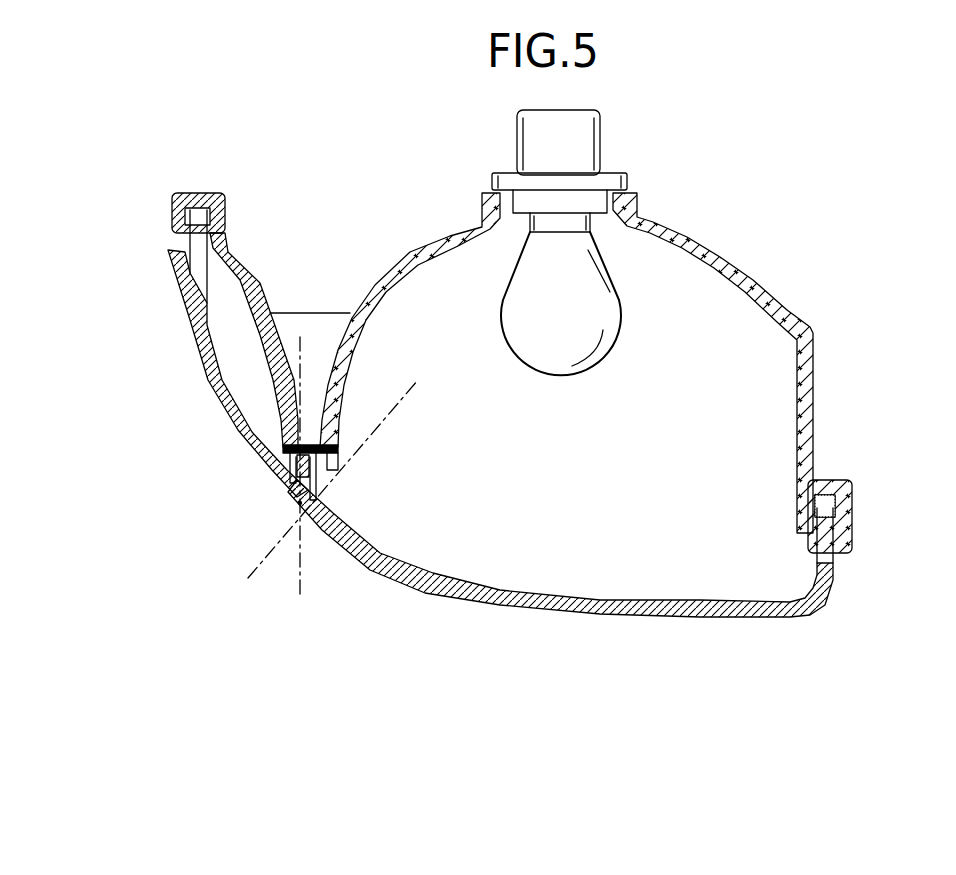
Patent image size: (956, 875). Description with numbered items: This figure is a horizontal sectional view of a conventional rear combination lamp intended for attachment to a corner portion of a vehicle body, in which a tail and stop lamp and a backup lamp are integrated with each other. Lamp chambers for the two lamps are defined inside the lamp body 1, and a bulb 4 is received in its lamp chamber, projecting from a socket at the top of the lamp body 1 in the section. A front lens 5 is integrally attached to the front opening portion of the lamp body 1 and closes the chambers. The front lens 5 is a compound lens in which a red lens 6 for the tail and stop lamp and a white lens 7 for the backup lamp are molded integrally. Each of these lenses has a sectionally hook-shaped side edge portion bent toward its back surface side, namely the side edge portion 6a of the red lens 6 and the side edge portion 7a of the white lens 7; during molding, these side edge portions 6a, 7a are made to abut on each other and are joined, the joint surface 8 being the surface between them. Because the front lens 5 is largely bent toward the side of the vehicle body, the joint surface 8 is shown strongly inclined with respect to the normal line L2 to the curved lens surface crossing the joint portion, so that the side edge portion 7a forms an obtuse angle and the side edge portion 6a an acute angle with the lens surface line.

The lamp body 1 is at (717, 243).
The bulb 4 is at (500, 292).
The front lens 5 is at (468, 434).
The red lens 6 is at (203, 345).
The white lens 7 is at (428, 592).
The side edge portion 6a is at (290, 481).
The side edge portion 7a is at (313, 475).
The joint surface 8 is at (300, 503).
The normal line L2 is at (400, 404).